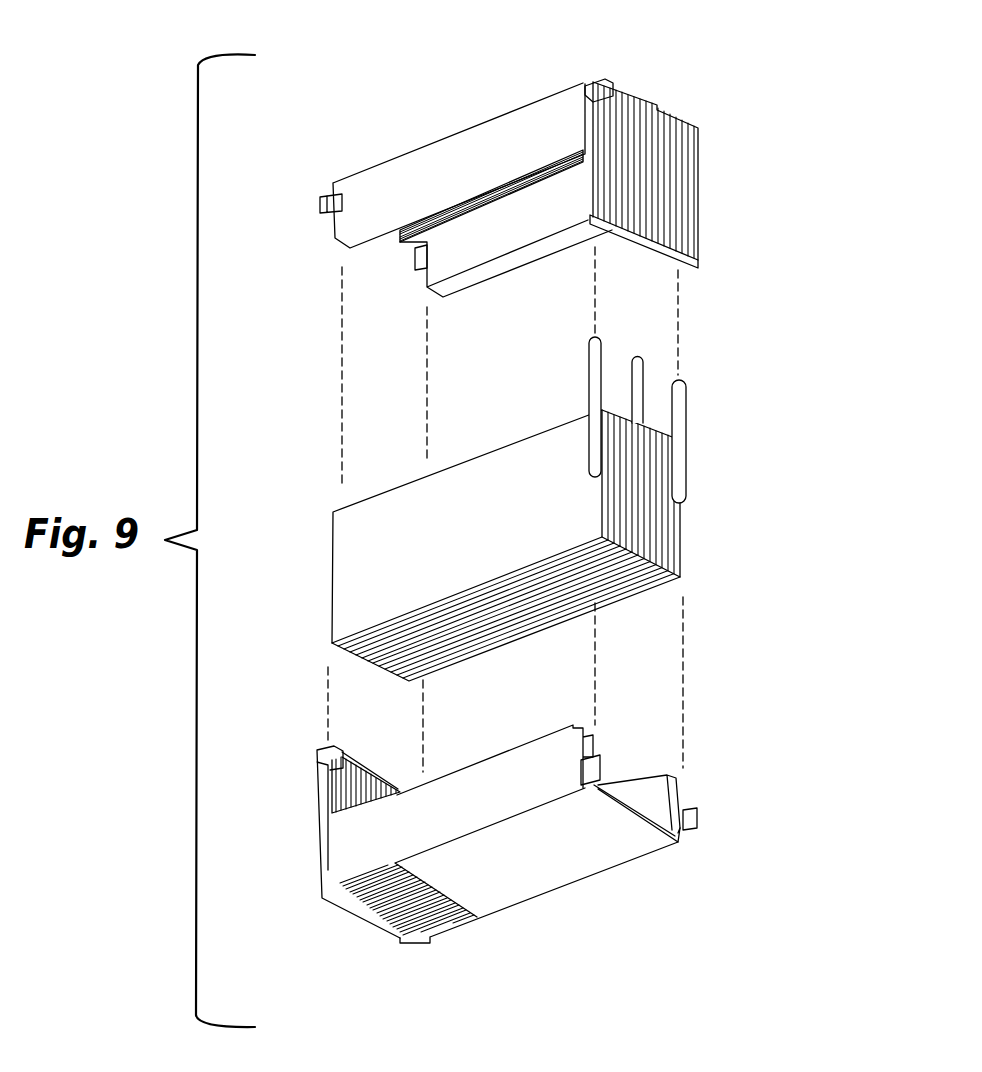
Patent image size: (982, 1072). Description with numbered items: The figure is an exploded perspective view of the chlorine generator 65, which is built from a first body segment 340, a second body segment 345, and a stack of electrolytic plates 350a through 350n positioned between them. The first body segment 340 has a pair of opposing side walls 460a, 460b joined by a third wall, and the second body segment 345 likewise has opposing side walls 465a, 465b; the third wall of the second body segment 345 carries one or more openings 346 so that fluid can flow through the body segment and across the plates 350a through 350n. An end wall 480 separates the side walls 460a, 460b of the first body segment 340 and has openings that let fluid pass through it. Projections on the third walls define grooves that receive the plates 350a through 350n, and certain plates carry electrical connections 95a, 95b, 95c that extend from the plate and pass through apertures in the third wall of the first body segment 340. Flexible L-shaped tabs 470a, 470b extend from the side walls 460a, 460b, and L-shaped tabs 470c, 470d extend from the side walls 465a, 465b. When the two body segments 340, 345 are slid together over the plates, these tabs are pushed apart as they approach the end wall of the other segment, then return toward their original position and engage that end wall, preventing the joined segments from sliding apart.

The first body segment 340 is at (380, 167).
The chlorine generator 65 is at (717, 177).
The L-shaped tab 470a is at (318, 206).
The side wall 460a is at (353, 223).
The side wall 460b is at (483, 257).
The L-shaped tab 470b is at (417, 260).
The end wall 480 is at (690, 213).
The electrical connection 95a is at (687, 398).
The electrical connection 95b is at (637, 355).
The electrical connection 95c is at (590, 370).
The electrolytic plate 350a is at (670, 517).
The electrolytic plate 350n is at (680, 548).
The second body segment 345 is at (545, 897).
The opening 346 is at (407, 940).
The side wall 465b is at (460, 790).
The side wall 465a is at (662, 798).
The L-shaped tab 470c is at (598, 762).
The L-shaped tab 470d is at (697, 828).